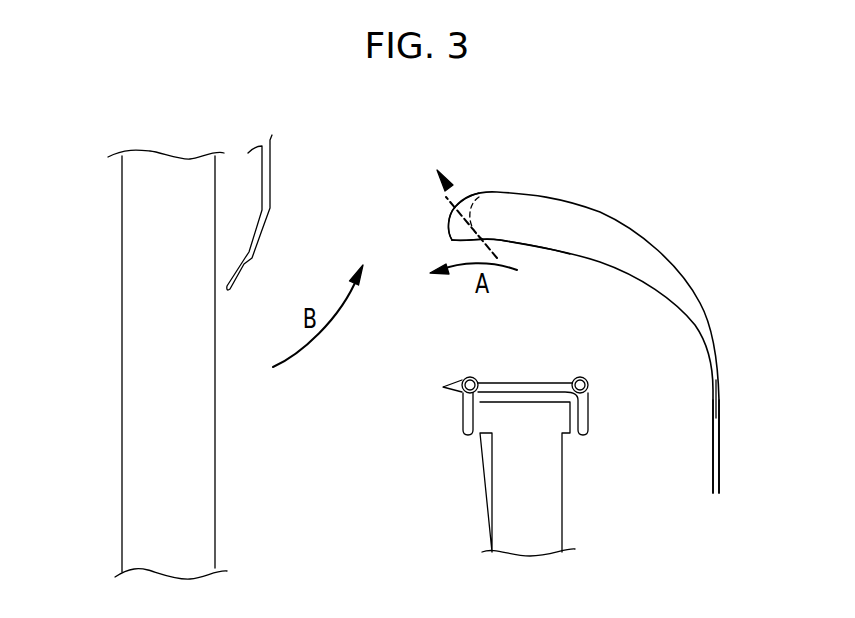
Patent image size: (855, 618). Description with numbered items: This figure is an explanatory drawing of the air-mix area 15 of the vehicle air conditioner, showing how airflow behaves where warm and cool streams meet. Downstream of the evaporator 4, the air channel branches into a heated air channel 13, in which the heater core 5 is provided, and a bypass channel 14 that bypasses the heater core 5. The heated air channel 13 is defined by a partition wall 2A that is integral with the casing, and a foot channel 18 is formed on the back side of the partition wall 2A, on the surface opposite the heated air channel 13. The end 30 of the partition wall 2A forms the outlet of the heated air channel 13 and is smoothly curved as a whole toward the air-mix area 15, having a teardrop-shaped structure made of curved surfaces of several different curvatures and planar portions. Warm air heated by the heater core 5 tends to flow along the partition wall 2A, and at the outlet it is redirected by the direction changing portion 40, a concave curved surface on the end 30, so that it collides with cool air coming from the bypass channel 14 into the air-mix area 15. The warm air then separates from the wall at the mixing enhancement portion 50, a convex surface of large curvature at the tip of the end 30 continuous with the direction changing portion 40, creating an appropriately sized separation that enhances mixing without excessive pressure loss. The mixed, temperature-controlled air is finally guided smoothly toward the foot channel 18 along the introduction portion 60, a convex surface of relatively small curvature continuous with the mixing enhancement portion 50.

The evaporator 4 is at (135, 362).
The air-mix area 15 is at (357, 248).
The bypass channel 14 is at (360, 367).
The end of the partition wall 30 is at (585, 225).
The introduction portion 60 is at (458, 202).
The mixing enhancement portion 50 is at (450, 238).
The direction changing portion 40 is at (493, 240).
The foot channel 18 is at (690, 212).
The heated air channel 13 is at (638, 343).
The partition wall 2A is at (718, 437).
The heater core 5 is at (543, 477).